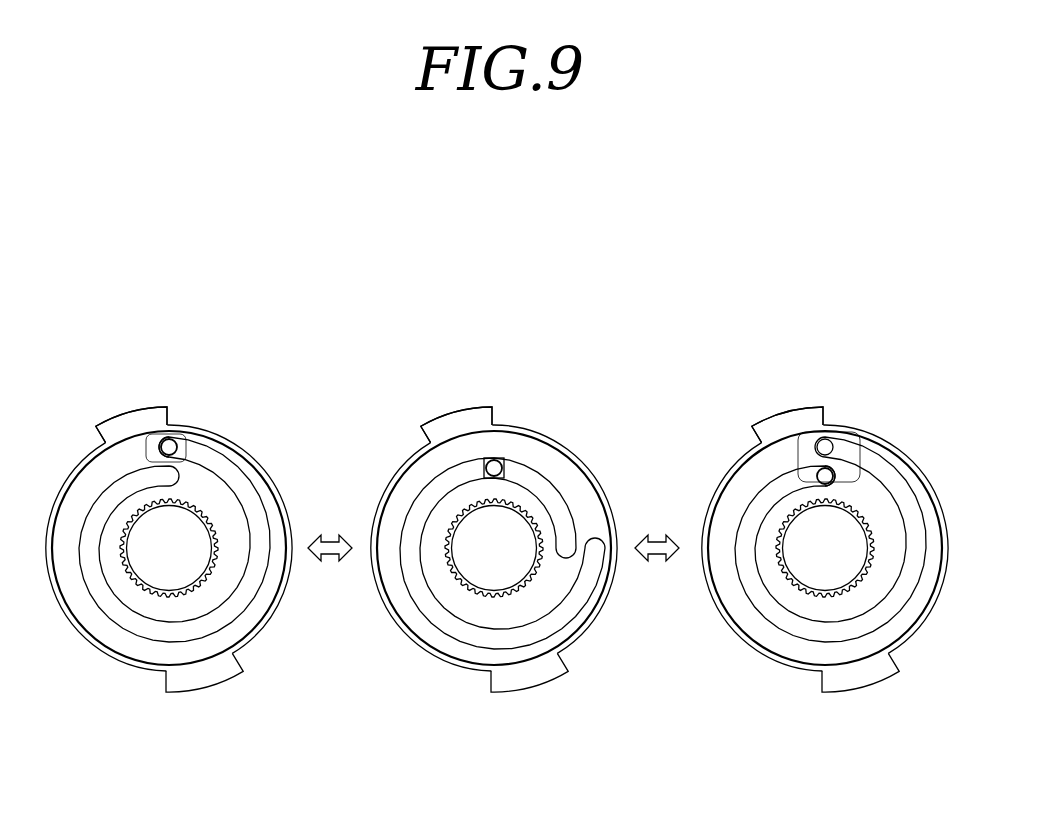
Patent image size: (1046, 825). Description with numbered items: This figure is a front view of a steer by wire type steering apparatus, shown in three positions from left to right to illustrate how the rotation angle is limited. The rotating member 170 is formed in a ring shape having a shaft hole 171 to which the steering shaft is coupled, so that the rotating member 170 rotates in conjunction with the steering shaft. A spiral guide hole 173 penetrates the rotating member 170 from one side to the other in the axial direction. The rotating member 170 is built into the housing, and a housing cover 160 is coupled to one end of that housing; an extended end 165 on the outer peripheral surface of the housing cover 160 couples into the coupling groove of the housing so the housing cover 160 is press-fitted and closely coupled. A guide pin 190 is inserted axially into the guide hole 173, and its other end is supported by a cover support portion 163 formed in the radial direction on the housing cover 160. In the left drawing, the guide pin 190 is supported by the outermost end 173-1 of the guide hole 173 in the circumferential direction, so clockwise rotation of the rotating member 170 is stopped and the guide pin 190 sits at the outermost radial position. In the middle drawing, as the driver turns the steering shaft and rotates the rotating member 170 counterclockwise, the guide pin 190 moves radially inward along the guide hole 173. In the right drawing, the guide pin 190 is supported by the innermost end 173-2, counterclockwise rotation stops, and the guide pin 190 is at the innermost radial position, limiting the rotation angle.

The housing cover 160 is at (264, 628).
The cover support portion 163 is at (178, 457).
The extended end 165 is at (127, 420).
The rotating member 170 is at (264, 486).
The shaft hole 171 is at (140, 592).
The guide hole 173 is at (90, 512).
The outermost end 173-1 is at (157, 452).
The innermost end 173-2 is at (860, 470).
The guide pin 190 is at (172, 446).